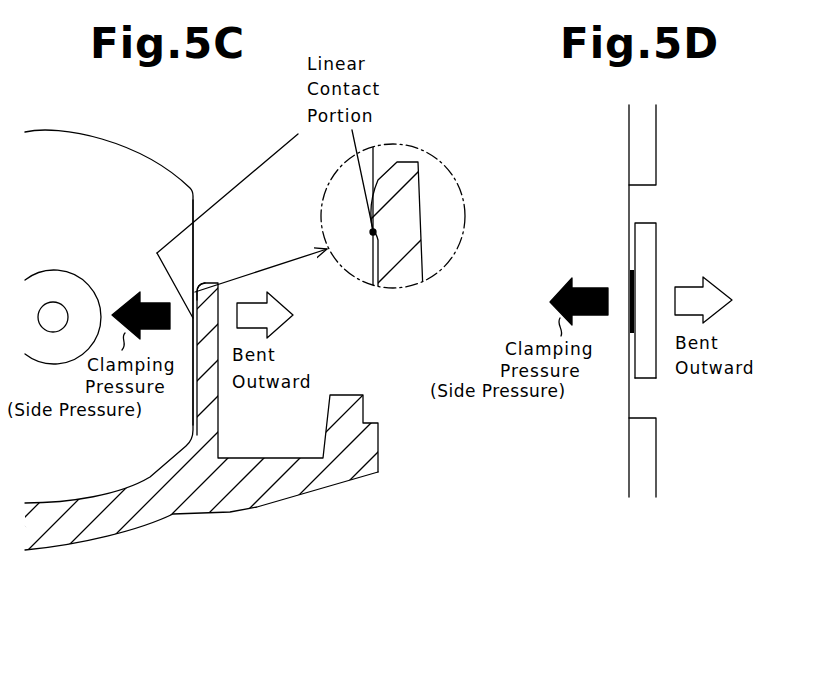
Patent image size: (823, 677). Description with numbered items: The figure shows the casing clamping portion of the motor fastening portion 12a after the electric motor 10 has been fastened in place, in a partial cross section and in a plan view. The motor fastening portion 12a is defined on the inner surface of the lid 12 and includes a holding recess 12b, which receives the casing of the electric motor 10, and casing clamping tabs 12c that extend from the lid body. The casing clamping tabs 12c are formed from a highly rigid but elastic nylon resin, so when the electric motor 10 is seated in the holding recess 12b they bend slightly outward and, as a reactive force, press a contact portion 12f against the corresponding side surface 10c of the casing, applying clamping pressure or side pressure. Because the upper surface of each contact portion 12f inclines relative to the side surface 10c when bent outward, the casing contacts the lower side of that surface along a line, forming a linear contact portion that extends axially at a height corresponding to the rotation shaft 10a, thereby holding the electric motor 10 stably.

In FIG. 5C, the electric motor 10 is at (147, 150).
In FIG. 5D, the electric motor 10 is at (631, 203).
In FIG. 5C, the rotation shaft 10a is at (53, 302).
In FIG. 5C, the side surface 10c is at (193, 192).
In FIG. 5C, the lid 12 is at (260, 506).
In FIG. 5D, the lid 12 is at (658, 468).
In FIG. 5C, the motor fastening portion 12a is at (219, 383).
In FIG. 5D, the motor fastening portion 12a is at (659, 376).
In FIG. 5C, the holding recess 12b is at (70, 498).
In FIG. 5D, the casing clamping tab 12c is at (650, 243).
In FIG. 5C, the contact portion 12f is at (189, 300).
In FIG. 5D, the contact portion 12f is at (630, 318).